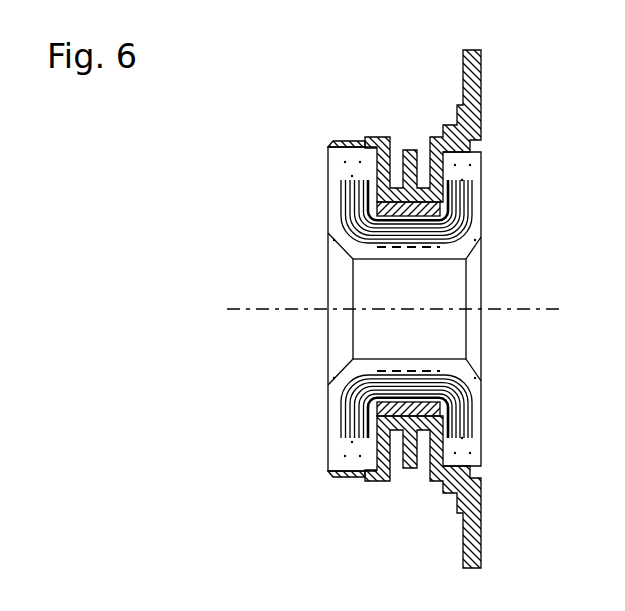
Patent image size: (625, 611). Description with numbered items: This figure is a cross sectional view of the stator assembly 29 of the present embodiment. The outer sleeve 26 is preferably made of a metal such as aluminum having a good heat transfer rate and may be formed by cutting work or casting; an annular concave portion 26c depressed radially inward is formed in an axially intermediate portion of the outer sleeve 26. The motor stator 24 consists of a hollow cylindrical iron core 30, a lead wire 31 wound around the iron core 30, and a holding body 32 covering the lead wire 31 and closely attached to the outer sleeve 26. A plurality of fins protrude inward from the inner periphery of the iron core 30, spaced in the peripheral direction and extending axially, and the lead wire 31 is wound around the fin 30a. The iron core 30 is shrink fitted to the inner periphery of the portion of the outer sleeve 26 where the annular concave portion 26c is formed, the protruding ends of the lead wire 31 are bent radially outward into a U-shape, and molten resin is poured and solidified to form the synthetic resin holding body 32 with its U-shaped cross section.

The motor stator 24 is at (489, 210).
The outer sleeve 26 is at (489, 117).
The annular concave portion 26c is at (390, 160).
The stator assembly 29 is at (282, 97).
The iron core 30 is at (395, 212).
The fin 30a is at (390, 248).
The lead wire 31 is at (345, 190).
The holding body 32 is at (352, 163).